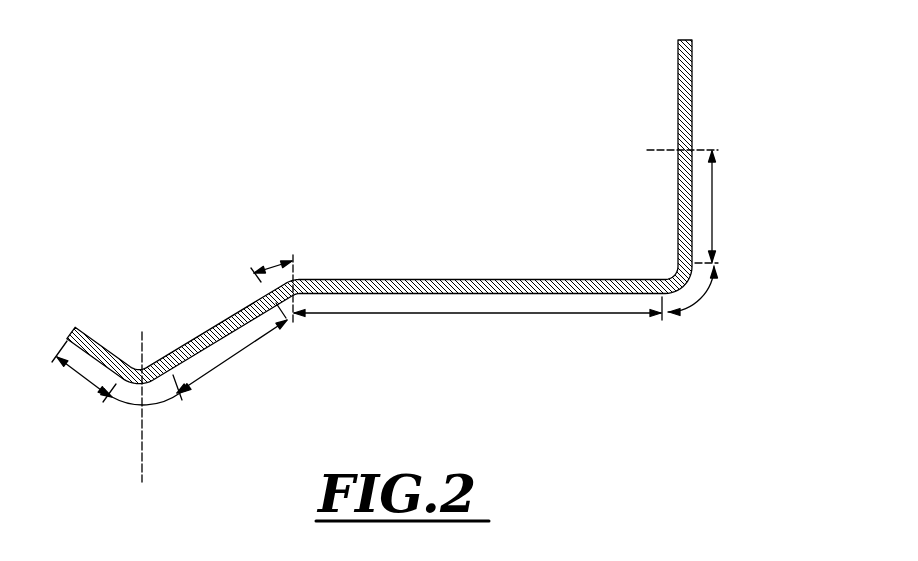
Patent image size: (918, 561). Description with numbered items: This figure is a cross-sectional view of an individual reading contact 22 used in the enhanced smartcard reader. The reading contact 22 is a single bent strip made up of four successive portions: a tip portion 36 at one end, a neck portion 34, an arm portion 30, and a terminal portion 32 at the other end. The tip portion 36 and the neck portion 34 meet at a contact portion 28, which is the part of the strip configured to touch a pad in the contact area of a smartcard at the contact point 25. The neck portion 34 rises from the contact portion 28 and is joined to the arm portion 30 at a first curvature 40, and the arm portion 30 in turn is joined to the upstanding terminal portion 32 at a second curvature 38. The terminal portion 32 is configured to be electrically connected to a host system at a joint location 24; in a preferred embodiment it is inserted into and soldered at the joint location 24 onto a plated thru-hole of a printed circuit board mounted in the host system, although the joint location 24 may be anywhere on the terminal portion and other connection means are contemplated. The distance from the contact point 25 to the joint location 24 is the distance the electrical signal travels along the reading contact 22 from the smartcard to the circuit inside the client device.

The reading contact 22 is at (800, 180).
The joint location 24 is at (698, 150).
The contact point 25 is at (143, 447).
The contact portion 28 is at (132, 403).
The arm portion 30 is at (468, 314).
The terminal portion 32 is at (713, 201).
The neck portion 34 is at (237, 354).
The tip portion 36 is at (90, 381).
The second curvature 38 is at (698, 301).
The first curvature 40 is at (280, 264).